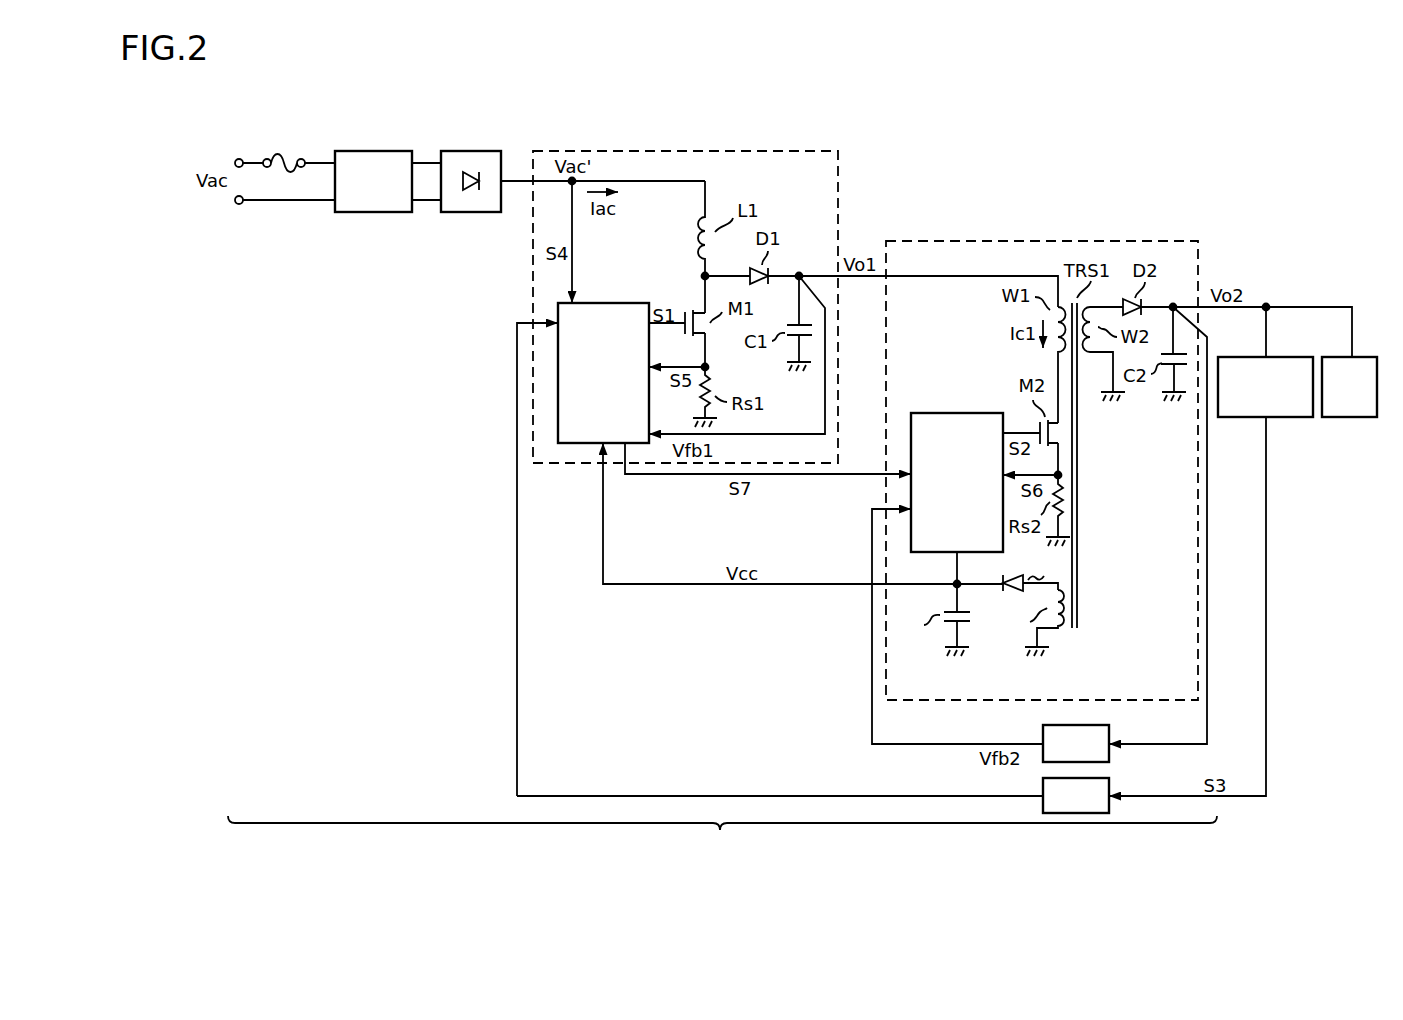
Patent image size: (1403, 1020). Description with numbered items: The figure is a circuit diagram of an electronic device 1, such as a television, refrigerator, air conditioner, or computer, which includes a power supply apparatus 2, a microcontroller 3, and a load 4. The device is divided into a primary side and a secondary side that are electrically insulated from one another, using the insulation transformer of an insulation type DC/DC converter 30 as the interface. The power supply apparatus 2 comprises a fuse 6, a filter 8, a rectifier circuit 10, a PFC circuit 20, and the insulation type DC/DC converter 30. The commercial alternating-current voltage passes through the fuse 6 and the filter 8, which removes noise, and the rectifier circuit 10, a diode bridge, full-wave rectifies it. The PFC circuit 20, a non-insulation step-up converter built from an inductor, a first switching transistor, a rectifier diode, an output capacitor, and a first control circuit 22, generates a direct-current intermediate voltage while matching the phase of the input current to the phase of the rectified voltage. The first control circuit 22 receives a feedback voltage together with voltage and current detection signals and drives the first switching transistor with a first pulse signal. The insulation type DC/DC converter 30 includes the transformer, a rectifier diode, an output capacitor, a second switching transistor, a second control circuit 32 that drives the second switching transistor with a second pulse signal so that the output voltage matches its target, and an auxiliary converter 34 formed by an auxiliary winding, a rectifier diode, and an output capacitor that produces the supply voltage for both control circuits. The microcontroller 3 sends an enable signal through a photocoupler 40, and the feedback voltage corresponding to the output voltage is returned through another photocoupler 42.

The electronic device 1 is at (777, 890).
The power supply apparatus 2 is at (722, 836).
The microcontroller 3 is at (1265, 412).
The load 4 is at (1349, 412).
The fuse 6 is at (282, 151).
The filter 8 is at (373, 159).
The rectifier circuit 10 is at (471, 159).
The PFC circuit 20 is at (685, 284).
The first control circuit 22 is at (603, 353).
The insulation type DC/DC converter 30 is at (1042, 448).
The second control circuit 32 is at (957, 461).
The auxiliary converter 34 is at (1083, 655).
The photocoupler 40 is at (1101, 784).
The photocoupler 42 is at (1101, 733).